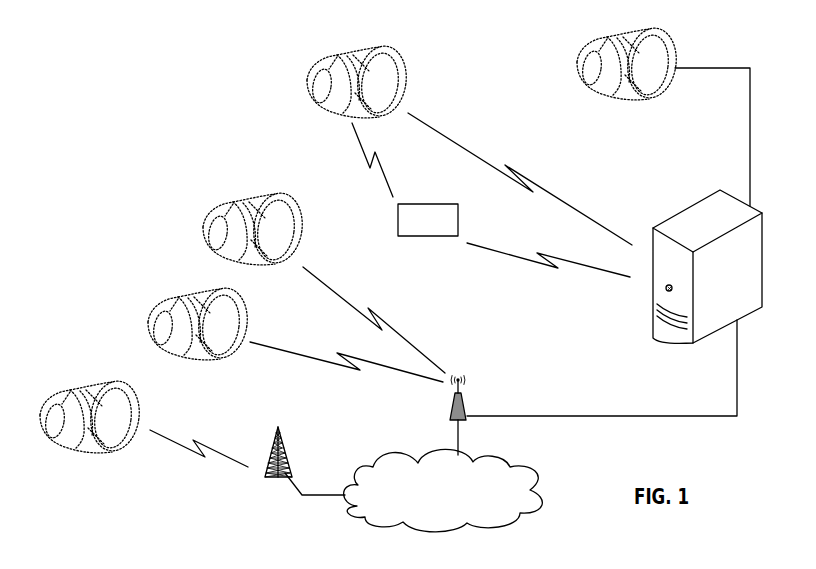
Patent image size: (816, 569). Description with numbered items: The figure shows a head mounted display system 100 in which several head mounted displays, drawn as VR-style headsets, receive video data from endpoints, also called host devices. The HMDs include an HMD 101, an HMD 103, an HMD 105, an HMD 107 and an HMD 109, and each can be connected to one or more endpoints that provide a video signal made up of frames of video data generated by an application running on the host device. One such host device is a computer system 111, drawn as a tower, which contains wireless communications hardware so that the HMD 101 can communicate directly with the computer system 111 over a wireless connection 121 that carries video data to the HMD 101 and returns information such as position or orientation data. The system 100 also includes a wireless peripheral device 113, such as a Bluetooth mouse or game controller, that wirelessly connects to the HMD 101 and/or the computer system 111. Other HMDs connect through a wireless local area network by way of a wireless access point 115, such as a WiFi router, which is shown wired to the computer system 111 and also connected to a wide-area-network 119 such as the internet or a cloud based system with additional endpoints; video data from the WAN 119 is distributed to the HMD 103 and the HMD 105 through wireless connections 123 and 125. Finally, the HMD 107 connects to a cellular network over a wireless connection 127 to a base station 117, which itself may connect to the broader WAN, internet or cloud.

The HMD system 100 is at (108, 135).
The HMD 101 is at (404, 52).
The HMD 103 is at (273, 186).
The HMD 105 is at (154, 310).
The HMD 107 is at (76, 385).
The HMD 109 is at (628, 110).
The computer system 111 is at (720, 278).
The wireless peripheral device 113 is at (416, 228).
The wireless access point 115 is at (468, 402).
The base station 117 is at (287, 448).
The wide-area-network 119 is at (436, 501).
The wireless connection 121 is at (520, 179).
The wireless connection 123 is at (374, 320).
The wireless connection 125 is at (346, 360).
The wireless connection 127 is at (199, 443).